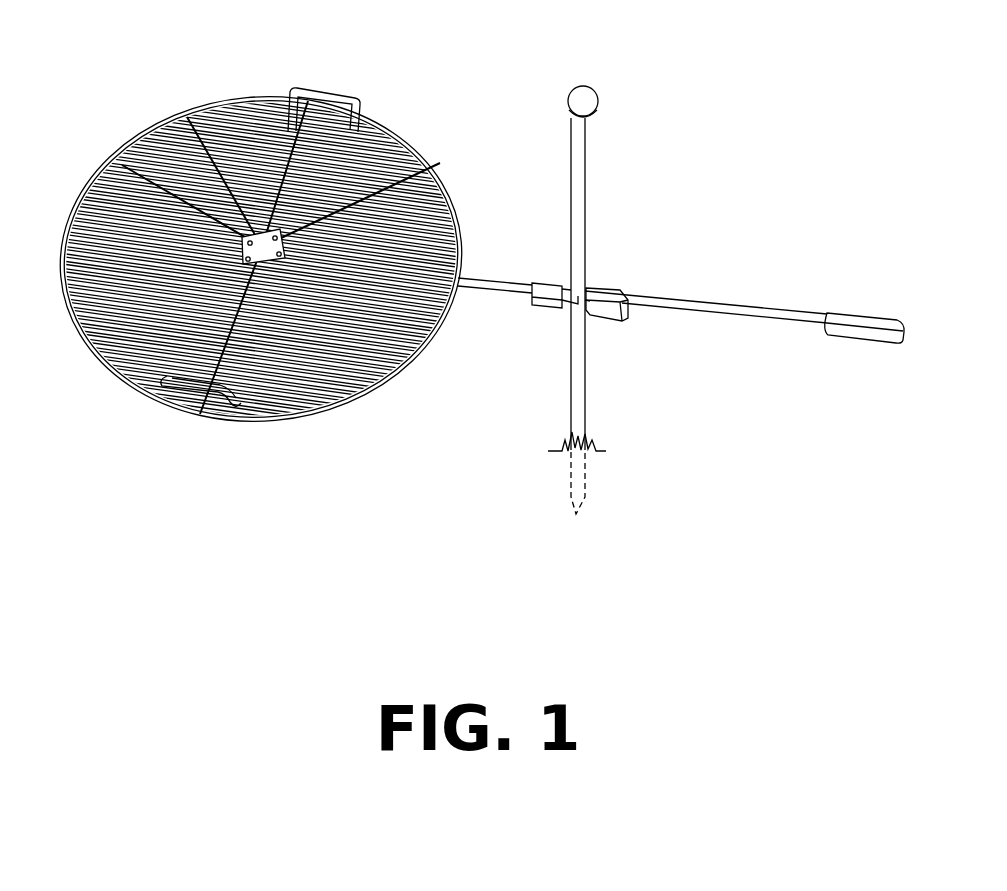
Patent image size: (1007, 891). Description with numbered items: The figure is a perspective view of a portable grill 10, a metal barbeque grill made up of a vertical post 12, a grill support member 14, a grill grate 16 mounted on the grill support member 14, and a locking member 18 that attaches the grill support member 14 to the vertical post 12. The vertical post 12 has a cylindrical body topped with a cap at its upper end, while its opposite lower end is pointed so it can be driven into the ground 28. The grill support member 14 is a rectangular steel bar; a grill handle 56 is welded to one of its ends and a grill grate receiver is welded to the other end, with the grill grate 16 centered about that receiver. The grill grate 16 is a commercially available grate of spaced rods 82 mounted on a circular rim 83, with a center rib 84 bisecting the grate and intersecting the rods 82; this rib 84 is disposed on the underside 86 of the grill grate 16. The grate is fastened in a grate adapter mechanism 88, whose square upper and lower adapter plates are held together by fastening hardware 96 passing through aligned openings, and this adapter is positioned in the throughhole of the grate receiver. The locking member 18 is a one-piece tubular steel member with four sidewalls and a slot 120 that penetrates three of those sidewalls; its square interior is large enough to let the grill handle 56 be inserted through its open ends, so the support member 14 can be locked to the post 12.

The portable grill 10 is at (642, 78).
The vertical post 12 is at (590, 176).
The grill support member 14 is at (690, 297).
The grill grate 16 is at (382, 128).
The locking member 18 is at (598, 290).
The ground 28 is at (593, 448).
The grill handle 56 is at (862, 318).
The spaced rods 82 is at (353, 390).
The circular rim 83 is at (262, 97).
The center rib 84 is at (304, 124).
The underside/lower side 86 is at (186, 410).
The grate adapter mechanism 88 is at (245, 162).
The fastening hardware 96 is at (123, 172).
The slot 120 is at (557, 290).